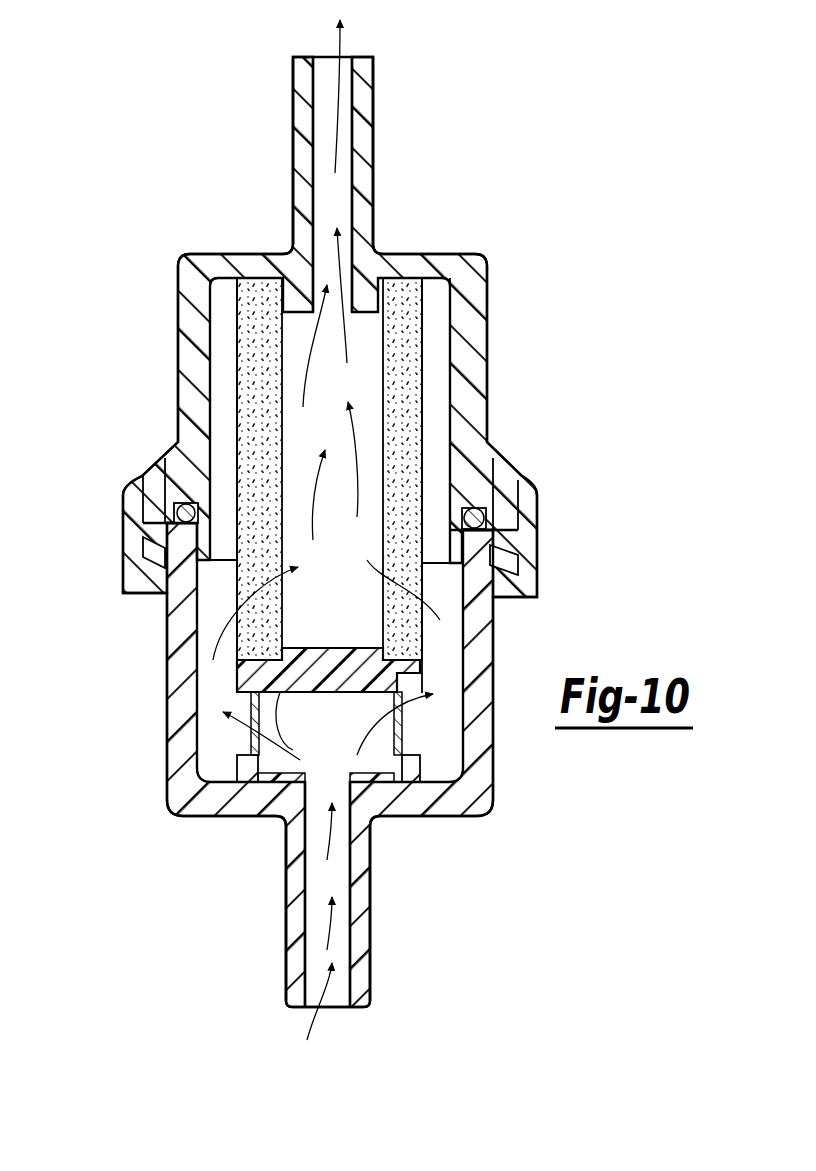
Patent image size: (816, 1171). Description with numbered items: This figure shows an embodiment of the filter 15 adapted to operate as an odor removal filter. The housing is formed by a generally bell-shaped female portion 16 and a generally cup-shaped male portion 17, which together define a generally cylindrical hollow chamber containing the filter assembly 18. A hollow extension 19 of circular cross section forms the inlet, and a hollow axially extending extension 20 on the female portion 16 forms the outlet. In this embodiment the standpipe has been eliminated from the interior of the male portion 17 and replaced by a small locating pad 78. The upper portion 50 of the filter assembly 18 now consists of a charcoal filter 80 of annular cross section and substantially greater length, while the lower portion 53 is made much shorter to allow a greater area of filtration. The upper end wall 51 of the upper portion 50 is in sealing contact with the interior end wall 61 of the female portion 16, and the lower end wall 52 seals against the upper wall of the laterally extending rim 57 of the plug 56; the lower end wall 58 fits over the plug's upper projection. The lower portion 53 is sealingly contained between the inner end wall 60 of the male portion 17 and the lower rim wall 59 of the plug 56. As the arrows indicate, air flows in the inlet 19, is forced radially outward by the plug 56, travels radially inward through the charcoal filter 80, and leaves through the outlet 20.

The filter 15 is at (488, 373).
The bell-shaped female portion 16 is at (486, 310).
The cup-shaped male portion 17 is at (167, 773).
The filter assembly 18 is at (425, 457).
The hollow extension (inlet) 19 is at (372, 935).
The hollow axially extending extension (outlet) 20 is at (373, 100).
The upper portion of filter assembly 50 is at (232, 342).
The upper end wall 51 is at (240, 302).
The lower end wall 52 is at (260, 657).
The lower portion of filter assembly 53 is at (200, 782).
The plug 56 is at (328, 671).
The laterally extending rim 57 is at (265, 660).
The lower end wall 58 is at (365, 665).
The lower wall of rim 59 is at (388, 665).
The interior end wall of male portion 60 is at (437, 783).
The interior end wall of female portion 61 is at (218, 278).
The locating pad 78 is at (245, 797).
The charcoal filter 80 is at (243, 410).